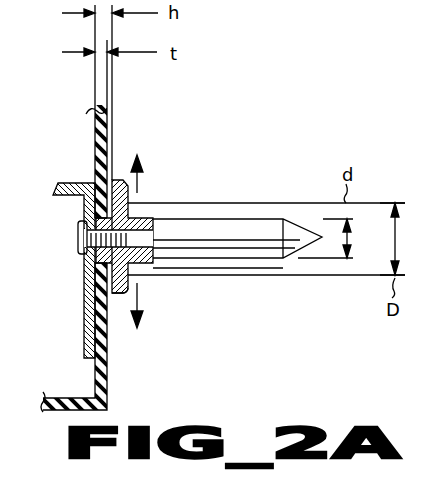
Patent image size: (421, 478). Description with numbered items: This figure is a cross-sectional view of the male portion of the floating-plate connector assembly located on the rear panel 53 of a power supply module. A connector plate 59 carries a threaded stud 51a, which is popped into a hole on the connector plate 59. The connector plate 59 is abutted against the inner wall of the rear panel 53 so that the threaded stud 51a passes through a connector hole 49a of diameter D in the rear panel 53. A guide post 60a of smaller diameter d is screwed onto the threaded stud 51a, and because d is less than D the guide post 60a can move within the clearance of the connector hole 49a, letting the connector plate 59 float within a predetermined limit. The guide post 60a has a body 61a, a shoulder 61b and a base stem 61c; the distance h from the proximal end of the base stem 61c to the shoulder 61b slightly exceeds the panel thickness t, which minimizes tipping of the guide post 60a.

The rear panel 53 is at (104, 122).
The connector plate 59 is at (85, 206).
The base stem 61c is at (96, 178).
The threaded stud 51a is at (152, 236).
The connector hole 49a is at (100, 268).
The shoulder 61b is at (120, 297).
The guide post 60a is at (223, 235).
The body 61a is at (270, 227).